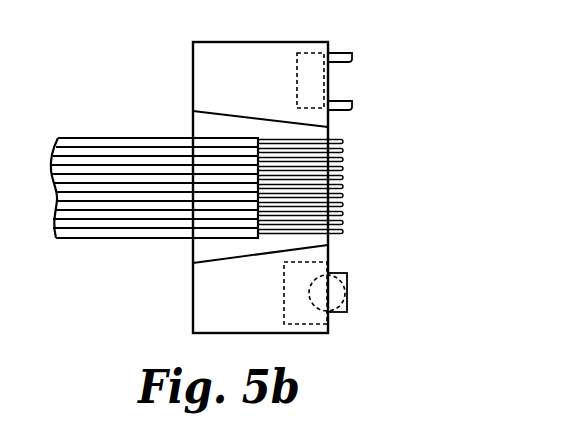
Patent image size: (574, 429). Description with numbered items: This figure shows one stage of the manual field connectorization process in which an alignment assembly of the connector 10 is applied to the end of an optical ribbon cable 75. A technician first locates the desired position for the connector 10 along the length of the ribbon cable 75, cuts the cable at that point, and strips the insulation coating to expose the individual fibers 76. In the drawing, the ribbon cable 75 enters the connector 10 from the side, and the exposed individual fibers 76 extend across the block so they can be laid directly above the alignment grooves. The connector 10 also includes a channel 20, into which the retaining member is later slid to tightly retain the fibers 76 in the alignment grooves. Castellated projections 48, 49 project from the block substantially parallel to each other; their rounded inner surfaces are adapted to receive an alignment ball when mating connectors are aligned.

The connector 10 is at (189, 42).
The channel 20 is at (190, 253).
The castellated projection 48 is at (348, 276).
The castellated projection 49 is at (352, 55).
The ribbon cable 75 is at (112, 138).
The individual fibers 76 is at (343, 177).